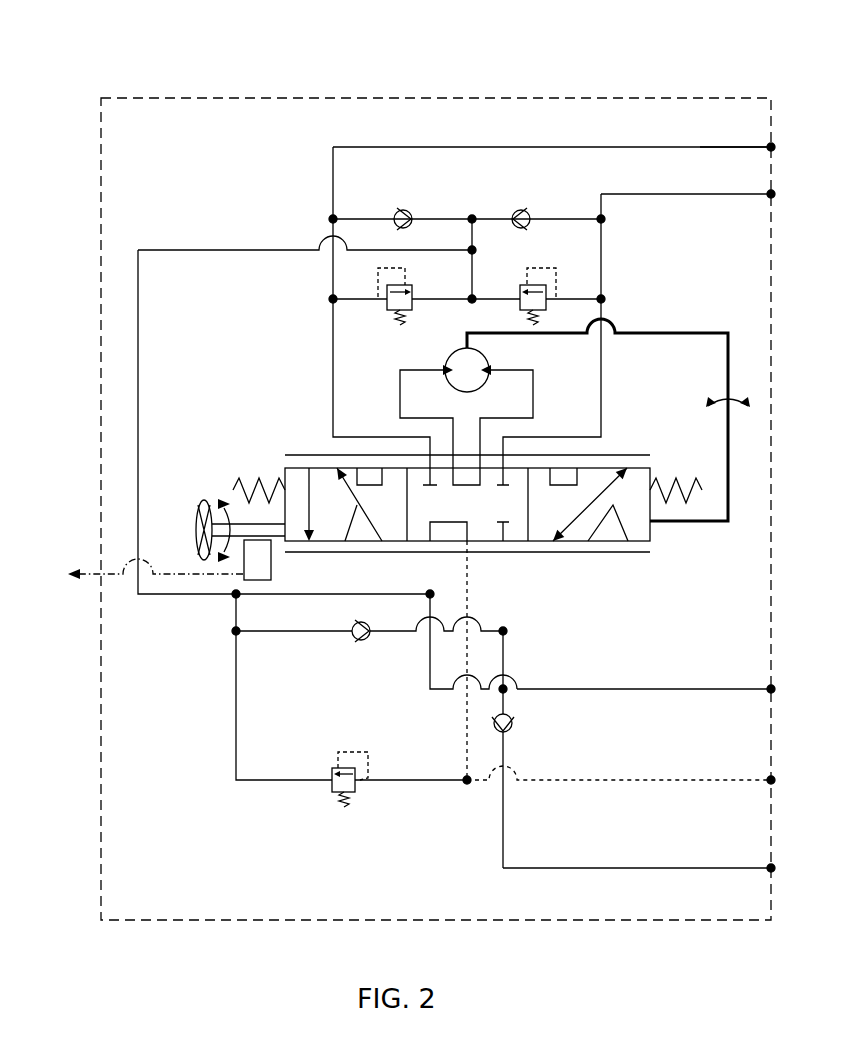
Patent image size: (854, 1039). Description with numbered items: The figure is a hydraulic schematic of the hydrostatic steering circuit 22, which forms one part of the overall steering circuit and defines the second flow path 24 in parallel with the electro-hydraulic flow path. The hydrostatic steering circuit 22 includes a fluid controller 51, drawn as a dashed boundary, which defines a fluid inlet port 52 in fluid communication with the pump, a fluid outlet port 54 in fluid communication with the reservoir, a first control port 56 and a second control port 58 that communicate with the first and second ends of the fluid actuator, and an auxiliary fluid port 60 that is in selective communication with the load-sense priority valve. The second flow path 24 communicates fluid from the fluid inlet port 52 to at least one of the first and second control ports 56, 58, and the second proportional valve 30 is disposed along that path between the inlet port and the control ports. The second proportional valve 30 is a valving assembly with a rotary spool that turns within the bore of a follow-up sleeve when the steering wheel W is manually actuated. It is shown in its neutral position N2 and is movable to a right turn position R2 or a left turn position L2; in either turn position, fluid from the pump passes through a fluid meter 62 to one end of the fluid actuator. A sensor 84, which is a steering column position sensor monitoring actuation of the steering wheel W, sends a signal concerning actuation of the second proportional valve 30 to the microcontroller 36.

The hydrostatic steering circuit 22 is at (436, 471).
The fluid controller 51 is at (314, 98).
The first control port 56 is at (768, 144).
The second control port 58 is at (768, 196).
The fluid outlet port 54 is at (768, 686).
The auxiliary fluid port 60 is at (768, 778).
The fluid inlet port 52 is at (768, 870).
The fluid meter 62 is at (452, 355).
The second proportional valve 30 is at (482, 526).
The second flow path 24 is at (520, 603).
The sensor 84 is at (271, 565).
The steering wheel W is at (203, 500).
The left turn position L2 is at (329, 546).
The neutral position N2 is at (484, 548).
The right turn position R2 is at (632, 548).
The microcontroller 36 is at (139, 577).